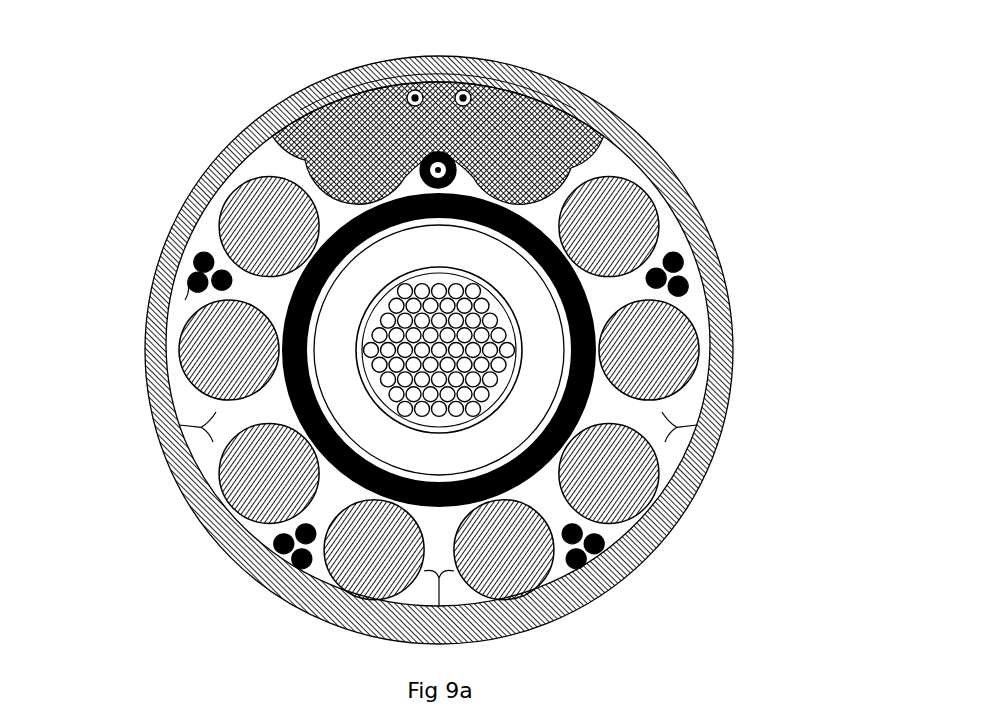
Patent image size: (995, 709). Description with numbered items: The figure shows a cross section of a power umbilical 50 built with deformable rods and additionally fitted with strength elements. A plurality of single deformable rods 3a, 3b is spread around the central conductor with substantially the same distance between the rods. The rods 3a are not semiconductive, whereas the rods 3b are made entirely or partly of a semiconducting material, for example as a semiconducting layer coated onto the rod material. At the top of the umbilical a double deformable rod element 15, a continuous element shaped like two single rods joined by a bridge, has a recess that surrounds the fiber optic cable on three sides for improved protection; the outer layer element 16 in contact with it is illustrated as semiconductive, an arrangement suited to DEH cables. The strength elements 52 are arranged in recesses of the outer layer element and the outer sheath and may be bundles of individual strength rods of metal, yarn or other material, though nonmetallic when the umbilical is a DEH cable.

The power umbilical 50 is at (718, 105).
The double deformable rod element 15 is at (308, 110).
The outer layer element 16 is at (353, 95).
The single deformable rod 3a is at (228, 365).
The single deformable rod 3b is at (180, 313).
The strength elements 52 is at (688, 280).